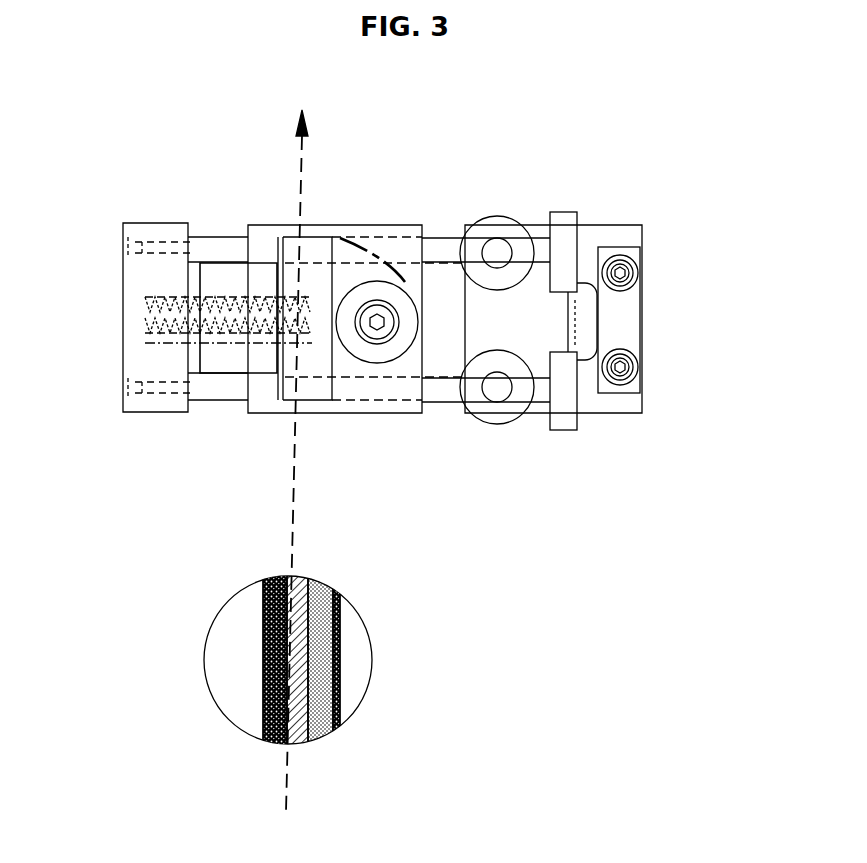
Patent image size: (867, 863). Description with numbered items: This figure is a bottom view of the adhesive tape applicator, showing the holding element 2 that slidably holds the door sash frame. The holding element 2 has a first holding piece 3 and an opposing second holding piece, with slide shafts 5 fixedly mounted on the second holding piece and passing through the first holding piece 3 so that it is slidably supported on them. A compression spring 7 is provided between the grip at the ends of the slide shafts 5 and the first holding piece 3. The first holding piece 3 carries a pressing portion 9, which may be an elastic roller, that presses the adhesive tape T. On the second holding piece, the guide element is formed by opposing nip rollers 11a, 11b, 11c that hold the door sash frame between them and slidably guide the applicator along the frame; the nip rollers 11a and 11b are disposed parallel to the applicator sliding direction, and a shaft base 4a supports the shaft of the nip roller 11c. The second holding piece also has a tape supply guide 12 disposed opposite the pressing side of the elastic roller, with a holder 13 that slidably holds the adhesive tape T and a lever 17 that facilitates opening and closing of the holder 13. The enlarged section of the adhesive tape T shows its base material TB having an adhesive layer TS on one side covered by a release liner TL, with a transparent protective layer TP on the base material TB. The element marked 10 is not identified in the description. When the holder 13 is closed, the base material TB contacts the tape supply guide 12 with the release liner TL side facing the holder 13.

The holding element 2 is at (622, 226).
The first holding piece 3 is at (358, 222).
The shaft base 4a is at (635, 320).
The slide shafts 5 is at (445, 237).
The compression spring 7 is at (190, 330).
The pressing portion 9 is at (383, 283).
The rollers 10 is at (498, 214).
The nip roller 11a is at (563, 431).
The nip roller 11b is at (560, 210).
The nip roller 11c is at (593, 362).
The tape supply guide 12 is at (300, 232).
The holder 13 is at (277, 250).
The lever 17 is at (200, 280).
The adhesive tape T is at (288, 523).
The release liner TL is at (200, 773).
The base material TB is at (323, 730).
The transparent protective layer TP is at (338, 660).
The adhesive layer TS is at (300, 740).